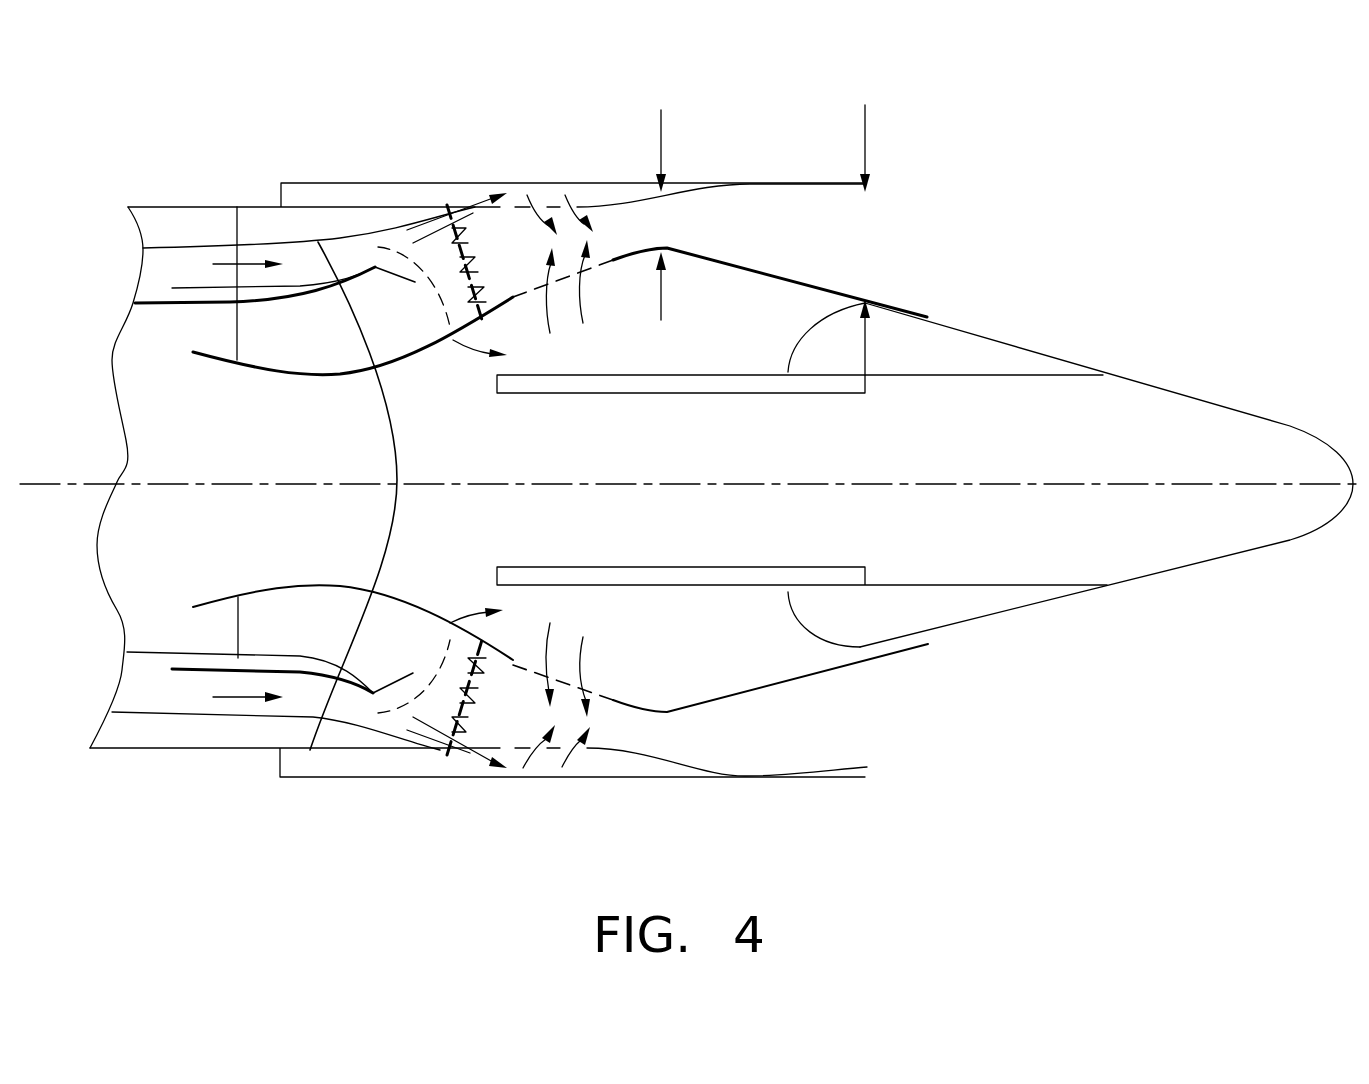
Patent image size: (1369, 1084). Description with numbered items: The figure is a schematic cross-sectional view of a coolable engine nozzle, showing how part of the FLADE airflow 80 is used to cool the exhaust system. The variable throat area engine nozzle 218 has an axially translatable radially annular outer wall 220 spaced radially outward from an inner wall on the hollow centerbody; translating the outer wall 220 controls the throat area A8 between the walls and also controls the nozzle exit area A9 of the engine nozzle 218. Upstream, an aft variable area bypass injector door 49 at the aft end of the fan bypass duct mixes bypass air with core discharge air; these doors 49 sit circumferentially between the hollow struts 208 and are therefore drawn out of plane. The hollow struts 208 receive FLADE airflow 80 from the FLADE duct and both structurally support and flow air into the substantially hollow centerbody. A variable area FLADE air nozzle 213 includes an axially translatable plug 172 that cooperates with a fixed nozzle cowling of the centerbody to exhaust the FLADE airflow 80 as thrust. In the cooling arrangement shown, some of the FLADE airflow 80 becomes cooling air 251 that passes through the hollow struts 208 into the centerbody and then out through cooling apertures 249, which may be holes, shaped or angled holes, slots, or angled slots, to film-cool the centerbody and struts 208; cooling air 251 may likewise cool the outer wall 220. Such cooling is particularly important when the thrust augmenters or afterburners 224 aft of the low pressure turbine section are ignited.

The FLADE airflow 80 is at (237, 262).
The axially translatable radially annular outer wall 220 is at (352, 183).
The variable throat area engine nozzle 218 is at (563, 168).
The aft variable area bypass injector door 49 is at (405, 283).
The hollow struts 208 is at (345, 343).
The thrust augmenters or afterburners 224 is at (468, 243).
The cooling apertures 249 is at (517, 300).
The variable area FLADE air nozzle 213 is at (975, 338).
The axially translatable plug 172 is at (1203, 398).
The throat area A8 is at (662, 128).
The nozzle exit area A9 is at (865, 120).
The cooling air 251 is at (460, 203).